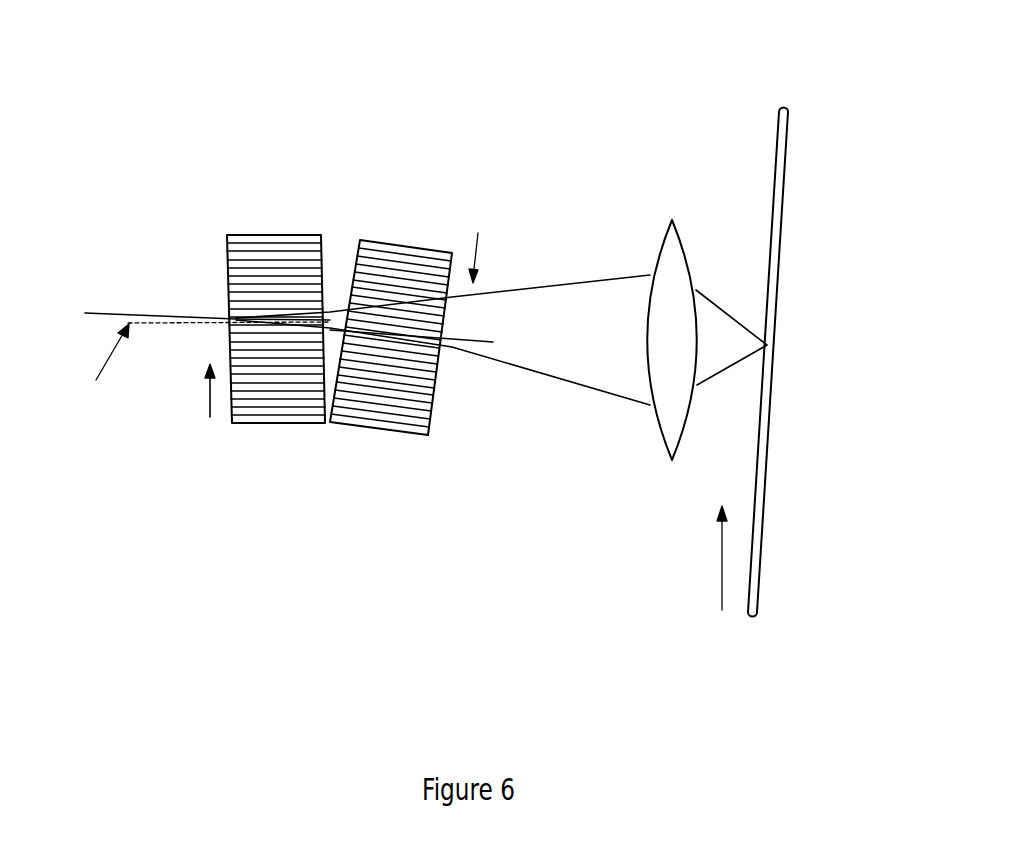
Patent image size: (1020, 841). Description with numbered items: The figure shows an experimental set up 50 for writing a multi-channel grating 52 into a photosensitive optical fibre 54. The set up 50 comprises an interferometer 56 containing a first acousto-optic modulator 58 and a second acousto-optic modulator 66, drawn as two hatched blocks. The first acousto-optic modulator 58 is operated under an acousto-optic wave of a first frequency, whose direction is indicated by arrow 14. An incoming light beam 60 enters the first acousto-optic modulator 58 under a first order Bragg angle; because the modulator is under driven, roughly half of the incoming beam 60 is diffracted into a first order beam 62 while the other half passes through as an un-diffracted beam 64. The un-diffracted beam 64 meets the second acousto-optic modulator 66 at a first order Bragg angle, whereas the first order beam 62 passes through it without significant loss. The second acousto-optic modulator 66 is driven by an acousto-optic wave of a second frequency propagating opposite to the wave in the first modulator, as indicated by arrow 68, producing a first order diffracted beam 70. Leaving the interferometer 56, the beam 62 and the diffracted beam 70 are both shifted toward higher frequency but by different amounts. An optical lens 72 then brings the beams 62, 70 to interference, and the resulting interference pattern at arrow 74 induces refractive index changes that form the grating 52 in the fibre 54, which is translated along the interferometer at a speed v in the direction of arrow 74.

The arrow 14 is at (208, 390).
The experimental set up 50 is at (568, 145).
The multi-channel grating 52 is at (783, 315).
The optical fibre 54 is at (762, 560).
The interferometer 56 is at (365, 505).
The first acousto-optic modulator 58 is at (254, 235).
The incoming light beam 60 is at (115, 313).
The first order beam 62 is at (347, 312).
The un-diffracted beam 64 is at (347, 312).
The second acousto-optic modulator 66 is at (397, 238).
The arrow 68 is at (483, 252).
The first order diffracted beam 70 is at (481, 367).
The optical lens 72 is at (661, 458).
The arrow 74 is at (720, 572).